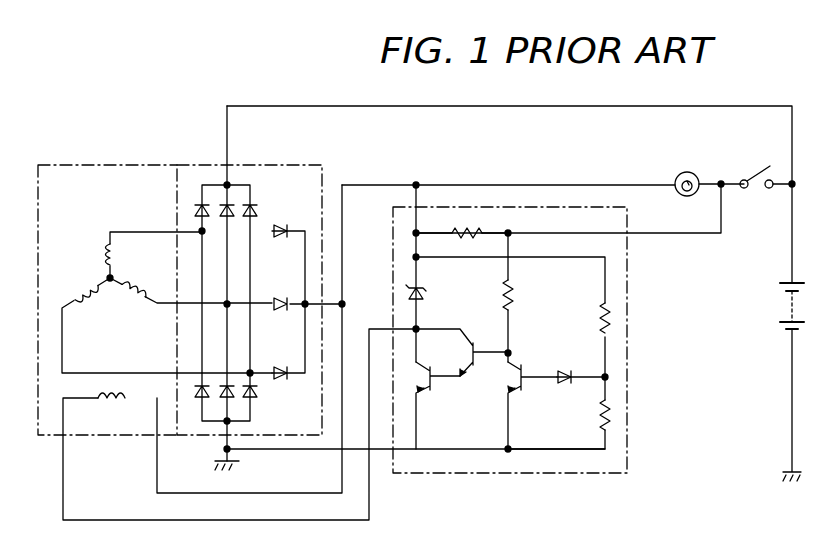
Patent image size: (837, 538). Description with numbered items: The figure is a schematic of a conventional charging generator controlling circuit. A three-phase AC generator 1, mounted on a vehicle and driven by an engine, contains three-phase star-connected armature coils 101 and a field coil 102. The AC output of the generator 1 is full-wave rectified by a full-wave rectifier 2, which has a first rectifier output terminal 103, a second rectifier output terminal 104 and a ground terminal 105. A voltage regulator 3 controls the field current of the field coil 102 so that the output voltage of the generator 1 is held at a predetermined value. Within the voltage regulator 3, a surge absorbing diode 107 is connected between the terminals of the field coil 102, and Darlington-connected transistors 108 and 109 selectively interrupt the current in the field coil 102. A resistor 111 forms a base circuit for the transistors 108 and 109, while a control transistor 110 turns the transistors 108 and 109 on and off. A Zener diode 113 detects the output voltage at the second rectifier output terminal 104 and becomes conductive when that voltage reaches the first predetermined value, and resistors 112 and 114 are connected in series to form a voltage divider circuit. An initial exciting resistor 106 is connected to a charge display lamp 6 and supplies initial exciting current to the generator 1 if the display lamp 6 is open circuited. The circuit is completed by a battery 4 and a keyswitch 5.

The three-phase AC generator 1 is at (97, 172).
The full-wave rectifier 2 is at (243, 166).
The voltage regulator 3 is at (538, 208).
The battery 4 is at (787, 302).
The keyswitch 5 is at (756, 191).
The charge display lamp 6 is at (696, 174).
The three-phase star-connected armature coils 101 is at (120, 283).
The field coil 102 is at (106, 400).
The first rectifier output terminal 103 is at (258, 201).
The second rectifier output terminal 104 is at (302, 290).
The ground terminal 105 is at (256, 408).
The initial exciting resistor 106 is at (463, 228).
The surge absorbing diode 107 is at (425, 296).
The Darlington-connected transistor 108 is at (422, 397).
The Darlington-connected transistor 109 is at (466, 370).
The control transistor 110 is at (508, 393).
The resistor 111 is at (516, 296).
The resistor 112 is at (600, 327).
The Zener diode 113 is at (560, 384).
The resistor 114 is at (598, 414).